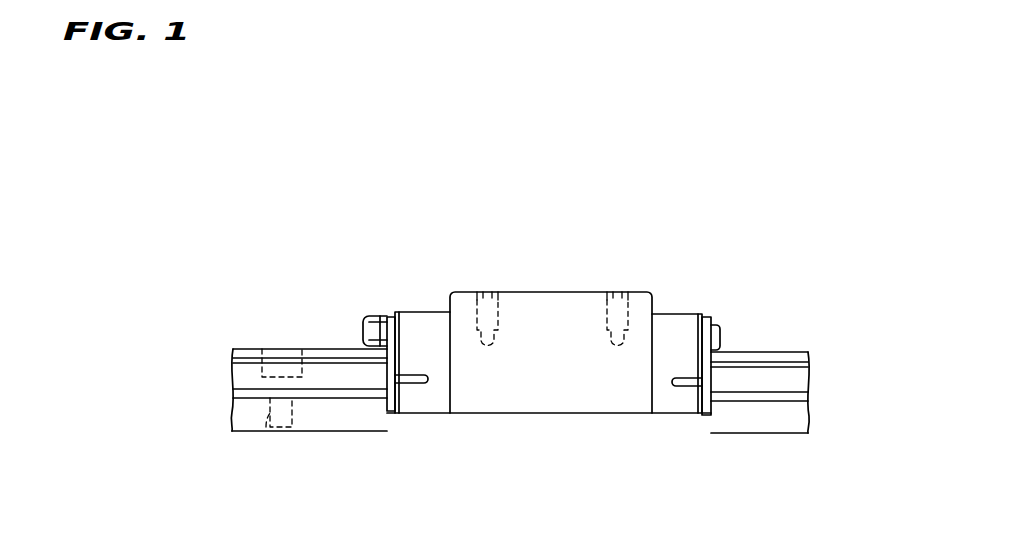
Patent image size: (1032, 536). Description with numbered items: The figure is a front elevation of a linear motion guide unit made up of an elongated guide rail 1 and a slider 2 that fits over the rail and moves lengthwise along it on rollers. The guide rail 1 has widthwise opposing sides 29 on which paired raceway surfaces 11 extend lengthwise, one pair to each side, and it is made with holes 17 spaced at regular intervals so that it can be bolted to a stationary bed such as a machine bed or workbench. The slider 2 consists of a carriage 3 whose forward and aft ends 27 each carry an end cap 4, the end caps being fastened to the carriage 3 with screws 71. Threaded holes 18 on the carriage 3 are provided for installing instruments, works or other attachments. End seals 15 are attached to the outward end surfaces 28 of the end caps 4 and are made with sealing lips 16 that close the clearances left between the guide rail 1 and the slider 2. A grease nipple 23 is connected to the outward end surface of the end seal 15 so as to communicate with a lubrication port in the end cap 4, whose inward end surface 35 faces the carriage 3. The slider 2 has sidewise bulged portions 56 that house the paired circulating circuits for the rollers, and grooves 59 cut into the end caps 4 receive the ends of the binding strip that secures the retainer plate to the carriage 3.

The guide rail 1 is at (322, 375).
The slider 2 is at (653, 291).
The carriage 3 is at (549, 315).
The end cap 4 is at (425, 325).
The raceway surface 11 is at (347, 365).
The end seal 15 is at (387, 413).
The sealing lip 16 is at (388, 372).
The hole 17 is at (273, 420).
The threaded hole 18 is at (486, 290).
The grease nipple 23 is at (370, 318).
The forward and aft end 27 is at (444, 385).
The outward end surface 28 is at (386, 318).
The widthwise opposing side 29 is at (787, 420).
The inward end surface 35 is at (452, 350).
The sidewise bulged portion 56 is at (556, 388).
The groove 59 is at (690, 392).
The screw 71 is at (380, 317).